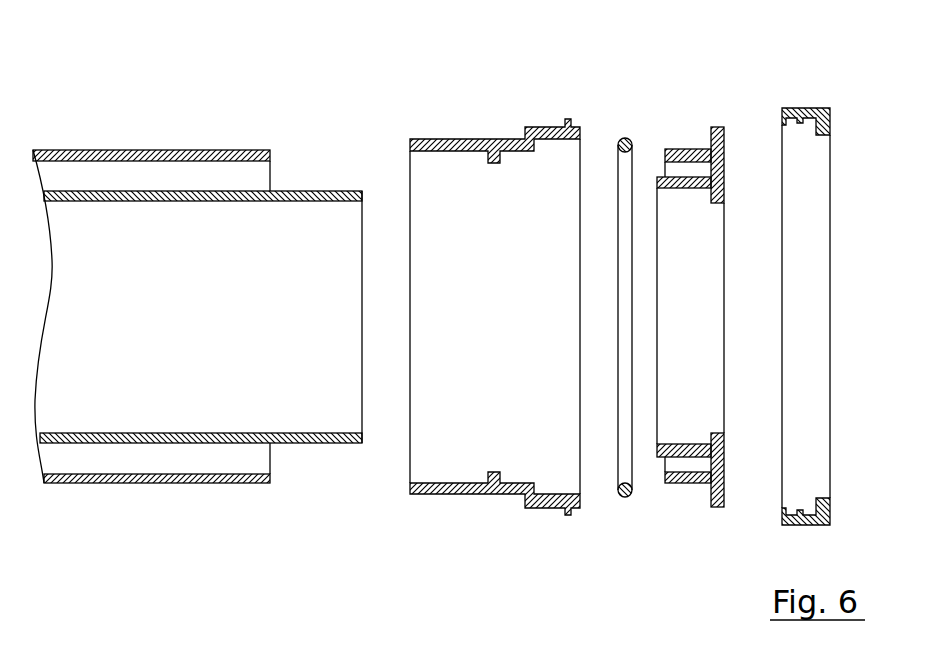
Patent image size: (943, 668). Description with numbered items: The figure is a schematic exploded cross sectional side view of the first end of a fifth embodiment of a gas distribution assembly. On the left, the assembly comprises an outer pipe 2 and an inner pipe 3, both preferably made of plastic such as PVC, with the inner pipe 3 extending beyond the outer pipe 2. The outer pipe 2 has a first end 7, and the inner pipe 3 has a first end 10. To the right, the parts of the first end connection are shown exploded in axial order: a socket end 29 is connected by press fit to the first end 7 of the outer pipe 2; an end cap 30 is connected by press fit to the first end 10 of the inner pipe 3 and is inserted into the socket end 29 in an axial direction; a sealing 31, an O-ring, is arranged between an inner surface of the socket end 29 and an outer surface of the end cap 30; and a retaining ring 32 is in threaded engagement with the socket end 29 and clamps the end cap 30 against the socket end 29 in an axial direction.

The outer pipe 2 is at (197, 323).
The inner pipe 3 is at (208, 455).
The first end of the outer pipe 7 is at (265, 150).
The first end of the inner pipe 10 is at (350, 433).
The socket end 29 is at (500, 139).
The end cap 30 is at (718, 127).
The sealing 31 is at (625, 138).
The retaining ring 32 is at (812, 108).